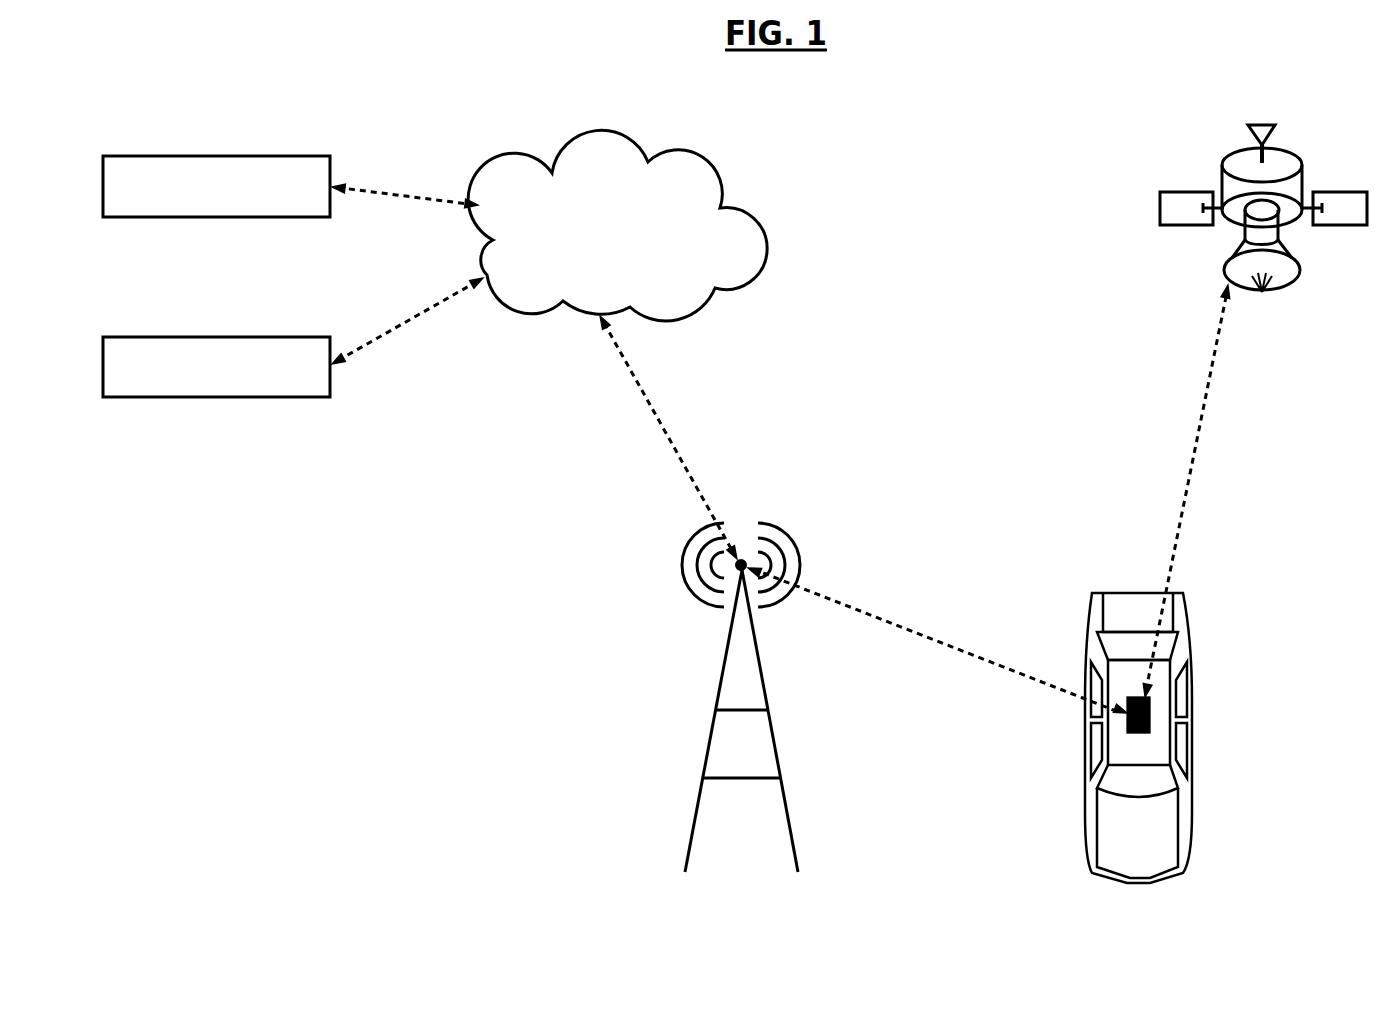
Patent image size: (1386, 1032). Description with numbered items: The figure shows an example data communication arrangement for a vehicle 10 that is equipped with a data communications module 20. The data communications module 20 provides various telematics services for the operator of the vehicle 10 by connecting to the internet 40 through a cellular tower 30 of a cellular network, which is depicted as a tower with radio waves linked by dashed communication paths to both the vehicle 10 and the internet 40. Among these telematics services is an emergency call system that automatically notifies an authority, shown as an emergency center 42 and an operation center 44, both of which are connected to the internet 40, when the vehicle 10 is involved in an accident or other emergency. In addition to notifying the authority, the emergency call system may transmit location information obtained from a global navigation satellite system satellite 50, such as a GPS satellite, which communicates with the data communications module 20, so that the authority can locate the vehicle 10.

The vehicle 10 is at (1158, 882).
The data communications module 20 is at (1150, 713).
The cellular tower 30 is at (718, 710).
The internet 40 is at (521, 305).
The emergency center 42 is at (178, 217).
The operation center 44 is at (170, 398).
The global navigation satellite system satellite 50 is at (1262, 295).